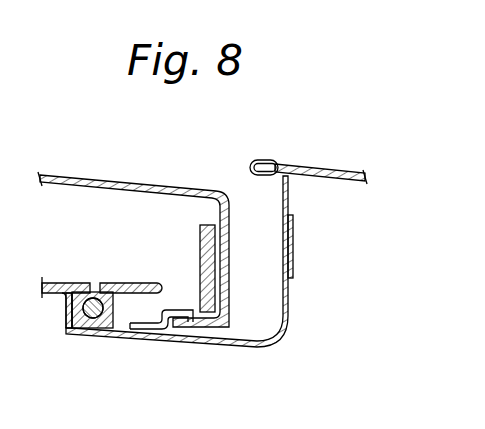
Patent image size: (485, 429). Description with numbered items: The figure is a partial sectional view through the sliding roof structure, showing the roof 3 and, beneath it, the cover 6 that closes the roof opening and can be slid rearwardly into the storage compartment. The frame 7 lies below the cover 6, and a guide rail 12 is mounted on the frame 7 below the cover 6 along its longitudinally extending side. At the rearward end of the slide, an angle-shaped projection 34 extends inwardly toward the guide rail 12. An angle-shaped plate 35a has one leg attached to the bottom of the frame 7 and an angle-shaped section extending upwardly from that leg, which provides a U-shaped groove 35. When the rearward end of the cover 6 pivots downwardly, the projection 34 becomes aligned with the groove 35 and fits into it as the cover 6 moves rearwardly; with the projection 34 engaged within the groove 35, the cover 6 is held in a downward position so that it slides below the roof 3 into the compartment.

The roof 3 is at (337, 171).
The cover 6 is at (125, 178).
The frame 7 is at (262, 345).
The guide rail 12 is at (124, 283).
The angle-shaped projection 34 is at (207, 320).
The groove 35 is at (171, 324).
The angle-shaped plate 35a is at (140, 331).